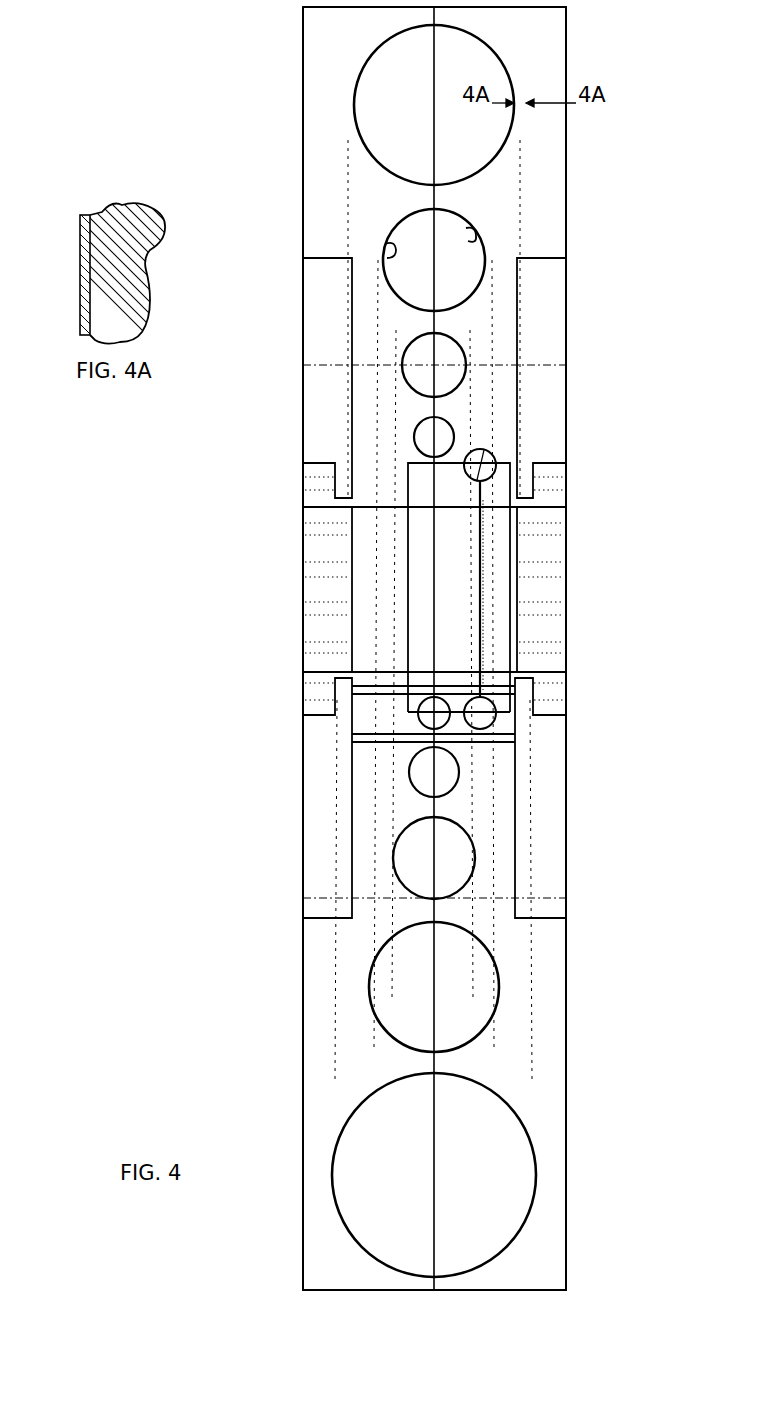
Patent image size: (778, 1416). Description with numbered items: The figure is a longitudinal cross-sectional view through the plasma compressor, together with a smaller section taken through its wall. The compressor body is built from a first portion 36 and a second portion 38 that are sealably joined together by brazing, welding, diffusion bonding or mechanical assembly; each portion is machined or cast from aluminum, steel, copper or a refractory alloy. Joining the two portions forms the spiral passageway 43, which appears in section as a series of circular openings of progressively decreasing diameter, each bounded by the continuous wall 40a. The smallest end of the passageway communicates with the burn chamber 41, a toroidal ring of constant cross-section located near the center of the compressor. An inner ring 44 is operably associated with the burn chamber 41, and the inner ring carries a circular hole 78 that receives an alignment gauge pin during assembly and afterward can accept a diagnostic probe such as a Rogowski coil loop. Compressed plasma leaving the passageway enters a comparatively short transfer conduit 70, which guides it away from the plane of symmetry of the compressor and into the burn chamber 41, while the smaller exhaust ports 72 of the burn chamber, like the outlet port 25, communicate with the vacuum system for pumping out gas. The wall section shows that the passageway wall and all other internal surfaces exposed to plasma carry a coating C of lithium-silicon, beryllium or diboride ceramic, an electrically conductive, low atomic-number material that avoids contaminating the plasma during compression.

In FIG. 4, the first portion 36 is at (567, 176).
In FIG. 4A, the first portion 36 is at (133, 287).
In FIG. 4, the second portion 38 is at (302, 215).
In FIG. 4, the spiral passageway 43 is at (385, 88).
In FIG. 4, the continuous wall 40a is at (385, 257).
In FIG. 4, the outlet port 25 is at (303, 493).
In FIG. 4, the inner ring 44 is at (410, 590).
In FIG. 4, the circular hole 78 is at (355, 737).
In FIG. 4, the transfer conduit 70 is at (460, 500).
In FIG. 4, the exhaust ports 72 is at (482, 578).
In FIG. 4, the burn chamber 41 is at (482, 718).
In FIG. 4A, the coating C is at (80, 289).